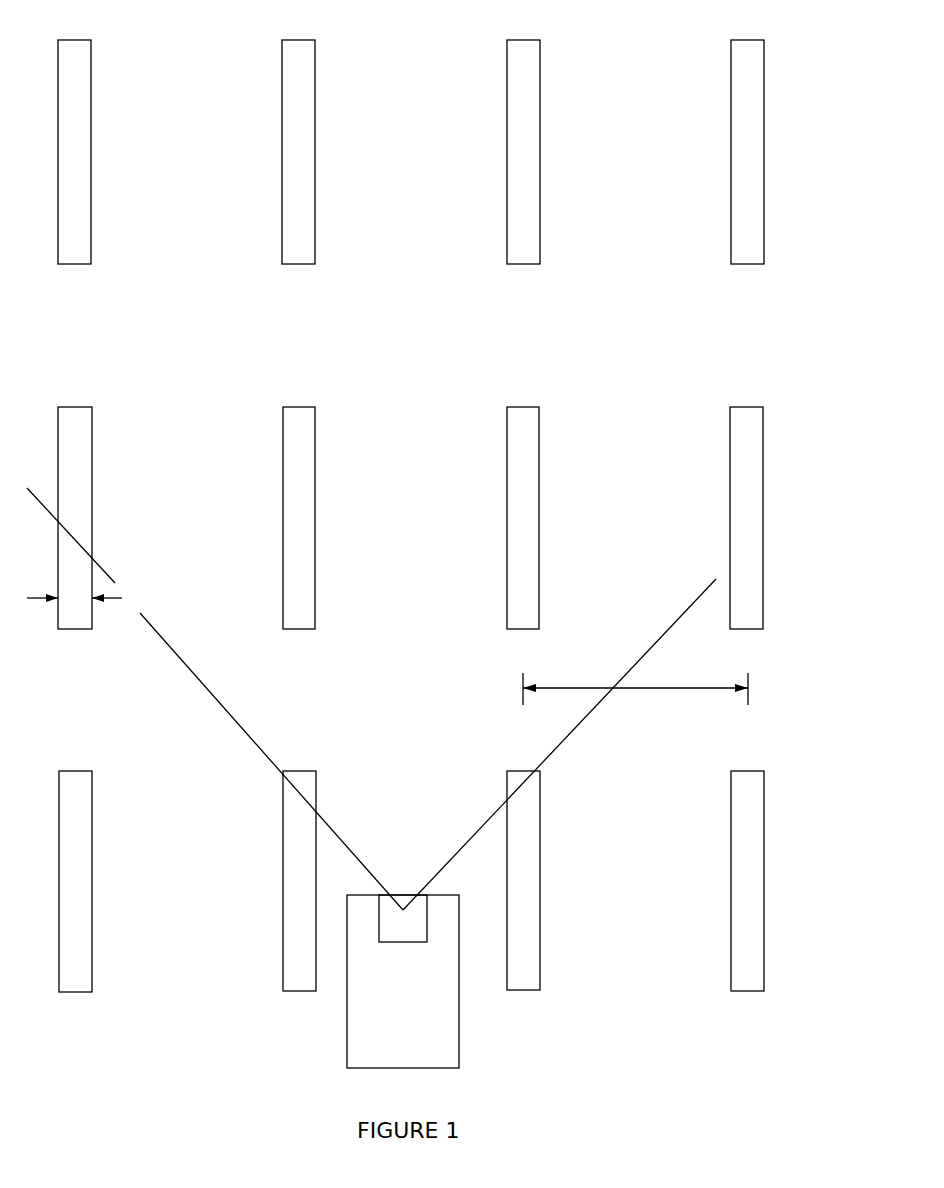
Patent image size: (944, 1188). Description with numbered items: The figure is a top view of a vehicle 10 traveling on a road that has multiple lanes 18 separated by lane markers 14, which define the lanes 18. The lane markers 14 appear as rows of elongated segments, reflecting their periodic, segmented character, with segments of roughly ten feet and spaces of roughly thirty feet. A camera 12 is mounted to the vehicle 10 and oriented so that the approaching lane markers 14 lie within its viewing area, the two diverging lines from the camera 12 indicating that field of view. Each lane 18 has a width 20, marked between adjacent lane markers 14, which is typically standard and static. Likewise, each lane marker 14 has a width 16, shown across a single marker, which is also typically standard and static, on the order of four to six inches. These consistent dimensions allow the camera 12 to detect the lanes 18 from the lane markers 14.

The vehicle 10 is at (443, 1051).
The camera 12 is at (413, 925).
The lane marker 14 is at (298, 230).
The lane marker width 16 is at (86, 547).
The lane 18 is at (201, 152).
The lane width 20 is at (635, 692).